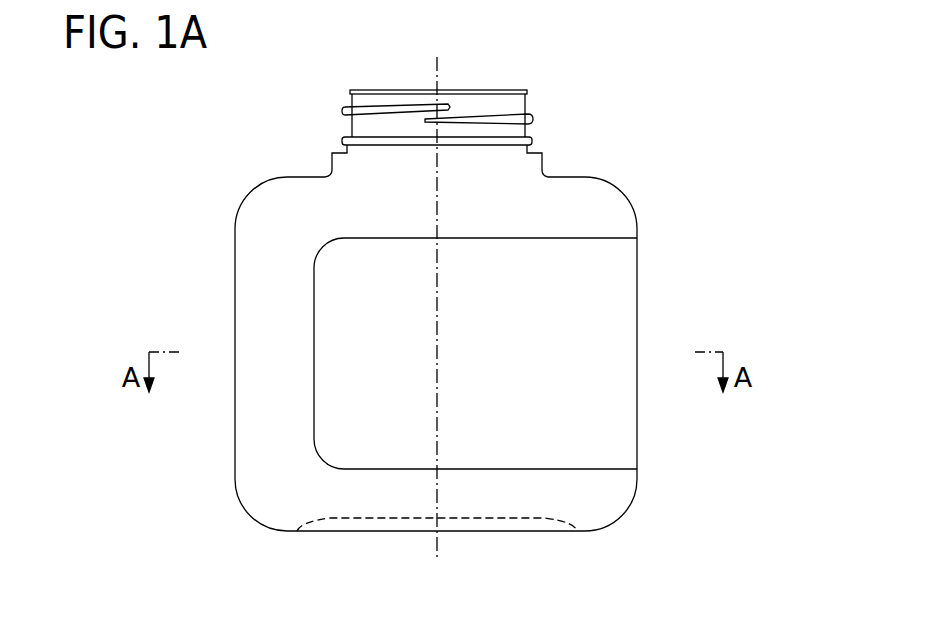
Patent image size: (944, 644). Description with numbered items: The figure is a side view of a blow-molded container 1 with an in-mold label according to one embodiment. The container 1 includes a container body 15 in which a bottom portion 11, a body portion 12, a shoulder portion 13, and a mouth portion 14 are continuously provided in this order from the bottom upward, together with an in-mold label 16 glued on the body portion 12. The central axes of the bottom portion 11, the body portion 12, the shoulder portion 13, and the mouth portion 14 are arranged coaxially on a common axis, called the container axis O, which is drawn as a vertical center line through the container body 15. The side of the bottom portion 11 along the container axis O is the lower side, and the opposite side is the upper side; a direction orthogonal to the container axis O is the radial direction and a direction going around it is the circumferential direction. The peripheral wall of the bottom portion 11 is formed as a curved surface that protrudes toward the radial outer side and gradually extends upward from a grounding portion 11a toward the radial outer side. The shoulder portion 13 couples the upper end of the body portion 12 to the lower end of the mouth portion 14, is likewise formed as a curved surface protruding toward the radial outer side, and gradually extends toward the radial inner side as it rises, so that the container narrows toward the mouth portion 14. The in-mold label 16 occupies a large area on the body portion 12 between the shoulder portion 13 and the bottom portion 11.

The blow-molded container with in-mold label 1 is at (745, 99).
The bottom portion 11 is at (624, 521).
The grounding portion 11a is at (583, 531).
The body portion 12 is at (228, 257).
The shoulder portion 13 is at (627, 193).
The mouth portion 14 is at (527, 105).
The container body 15 is at (238, 188).
The in-mold label 16 is at (593, 248).
The container axis O is at (437, 72).